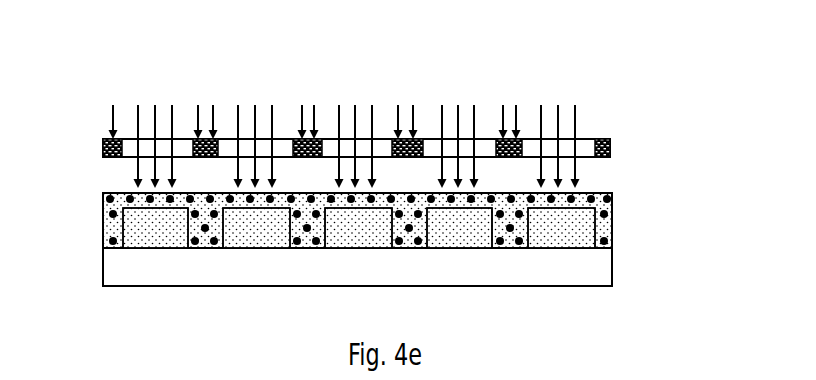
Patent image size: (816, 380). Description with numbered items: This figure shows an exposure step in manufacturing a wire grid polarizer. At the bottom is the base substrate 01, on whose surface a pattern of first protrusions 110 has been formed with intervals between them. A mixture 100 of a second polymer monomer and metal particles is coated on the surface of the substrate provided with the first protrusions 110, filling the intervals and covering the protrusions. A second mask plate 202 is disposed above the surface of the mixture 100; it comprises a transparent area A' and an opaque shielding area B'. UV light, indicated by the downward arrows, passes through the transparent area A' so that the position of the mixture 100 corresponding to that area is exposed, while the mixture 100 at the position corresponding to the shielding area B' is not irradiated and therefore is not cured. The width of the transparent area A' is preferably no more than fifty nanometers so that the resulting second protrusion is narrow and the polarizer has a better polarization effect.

The second mask plate 202 is at (666, 102).
The transparent area A' is at (382, 161).
The shielding area B' is at (379, 127).
The mixture 100 is at (606, 226).
The first protrusions 110 is at (151, 226).
The base substrate 01 is at (141, 268).